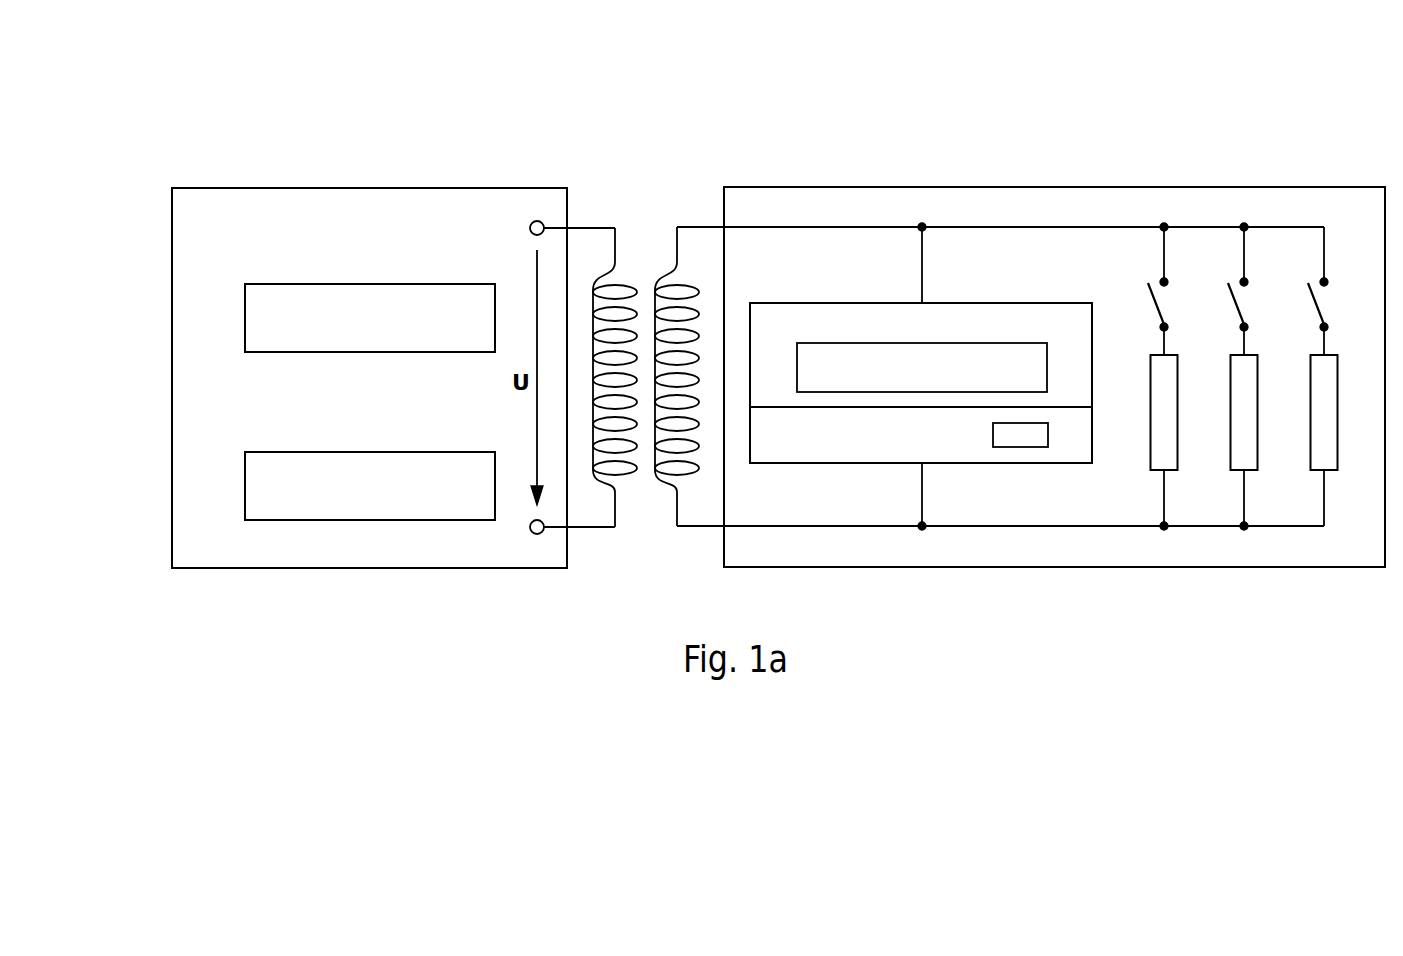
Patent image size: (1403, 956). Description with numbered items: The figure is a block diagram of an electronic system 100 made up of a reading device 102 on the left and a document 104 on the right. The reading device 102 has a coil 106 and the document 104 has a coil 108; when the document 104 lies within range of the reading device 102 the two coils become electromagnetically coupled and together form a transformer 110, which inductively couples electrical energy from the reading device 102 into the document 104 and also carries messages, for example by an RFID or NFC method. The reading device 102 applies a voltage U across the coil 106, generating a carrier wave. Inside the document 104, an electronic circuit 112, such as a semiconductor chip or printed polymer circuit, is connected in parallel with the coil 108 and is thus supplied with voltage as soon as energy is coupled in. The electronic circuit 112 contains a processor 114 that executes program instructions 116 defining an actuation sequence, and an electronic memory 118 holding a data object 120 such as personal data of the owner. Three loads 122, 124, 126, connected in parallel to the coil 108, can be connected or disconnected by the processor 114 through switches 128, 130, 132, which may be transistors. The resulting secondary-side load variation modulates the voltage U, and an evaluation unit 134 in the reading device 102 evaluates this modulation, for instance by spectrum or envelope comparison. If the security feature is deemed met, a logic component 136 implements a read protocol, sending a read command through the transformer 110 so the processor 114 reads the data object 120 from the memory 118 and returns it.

The electronic system 100 is at (262, 126).
The reading device 102 is at (370, 187).
The document 104 is at (1053, 187).
The coil 106 is at (587, 530).
The coil 108 is at (695, 530).
The transformer 110 is at (723, 161).
The electronic circuit 112 is at (1070, 298).
The processor 114 is at (970, 303).
The program instructions 116 is at (1020, 343).
The electronic memory 118 is at (965, 465).
The data object 120 is at (1020, 448).
The load 122 is at (1178, 442).
The load 124 is at (1258, 442).
The load 126 is at (1338, 442).
The switch 128 is at (1158, 307).
The switch 130 is at (1238, 307).
The switch 132 is at (1318, 307).
The evaluation unit 134 is at (272, 284).
The logic component 136 is at (272, 452).